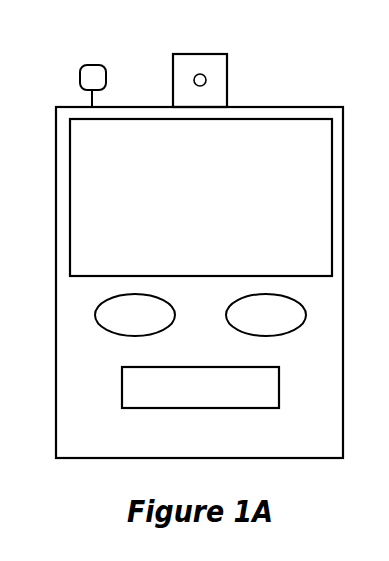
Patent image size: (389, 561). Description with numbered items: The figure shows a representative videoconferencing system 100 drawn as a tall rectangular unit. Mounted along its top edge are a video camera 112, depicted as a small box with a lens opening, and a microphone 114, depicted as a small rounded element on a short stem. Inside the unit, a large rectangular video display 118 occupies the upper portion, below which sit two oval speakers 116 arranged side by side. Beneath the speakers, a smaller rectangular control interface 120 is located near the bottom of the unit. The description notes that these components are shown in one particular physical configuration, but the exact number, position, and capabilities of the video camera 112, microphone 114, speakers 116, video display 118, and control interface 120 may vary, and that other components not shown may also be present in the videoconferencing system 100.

The videoconferencing system 100 is at (213, 263).
The video camera 112 is at (221, 64).
The microphone 114 is at (68, 68).
The speakers 116 is at (200, 315).
The video display 118 is at (201, 197).
The control interface 120 is at (200, 387).